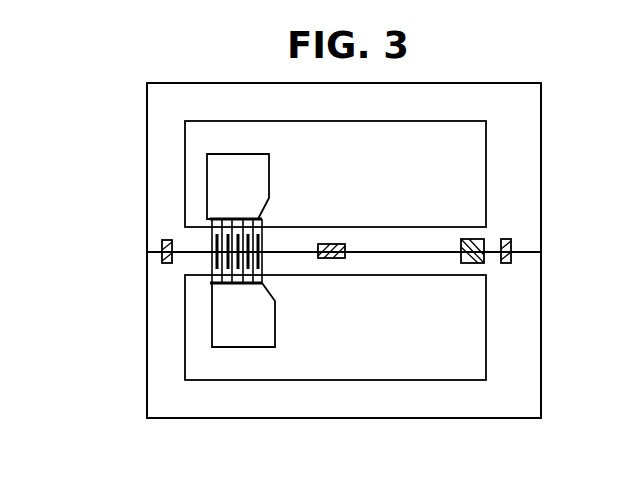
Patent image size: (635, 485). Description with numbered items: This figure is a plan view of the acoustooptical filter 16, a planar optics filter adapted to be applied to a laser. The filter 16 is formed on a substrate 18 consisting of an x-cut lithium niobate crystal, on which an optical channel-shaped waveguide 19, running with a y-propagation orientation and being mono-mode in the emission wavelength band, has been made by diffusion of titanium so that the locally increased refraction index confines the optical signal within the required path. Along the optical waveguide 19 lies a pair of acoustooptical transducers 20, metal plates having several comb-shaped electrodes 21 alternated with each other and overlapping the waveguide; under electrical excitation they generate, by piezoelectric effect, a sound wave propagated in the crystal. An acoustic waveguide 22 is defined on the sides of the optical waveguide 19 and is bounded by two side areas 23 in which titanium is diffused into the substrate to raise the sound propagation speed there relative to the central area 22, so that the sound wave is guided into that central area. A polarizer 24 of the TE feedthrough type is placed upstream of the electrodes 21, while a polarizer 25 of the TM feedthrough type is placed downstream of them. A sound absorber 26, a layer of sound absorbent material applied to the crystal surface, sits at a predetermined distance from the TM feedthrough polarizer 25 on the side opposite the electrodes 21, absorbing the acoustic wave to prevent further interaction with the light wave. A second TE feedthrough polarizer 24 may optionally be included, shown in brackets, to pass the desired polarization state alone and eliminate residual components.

The acoustooptical filter 16 is at (551, 134).
The substrate 18 is at (495, 412).
The optical channel-shaped waveguide 19 is at (418, 248).
The acoustooptical transducers 20 is at (266, 176).
The electrodes 21 is at (210, 263).
The acoustic waveguide 22 is at (390, 240).
The side areas 23 is at (483, 150).
The TE feedthrough polarizer 24 is at (165, 240).
The TM feedthrough polarizer 25 is at (333, 246).
The sound absorber 26 is at (484, 239).